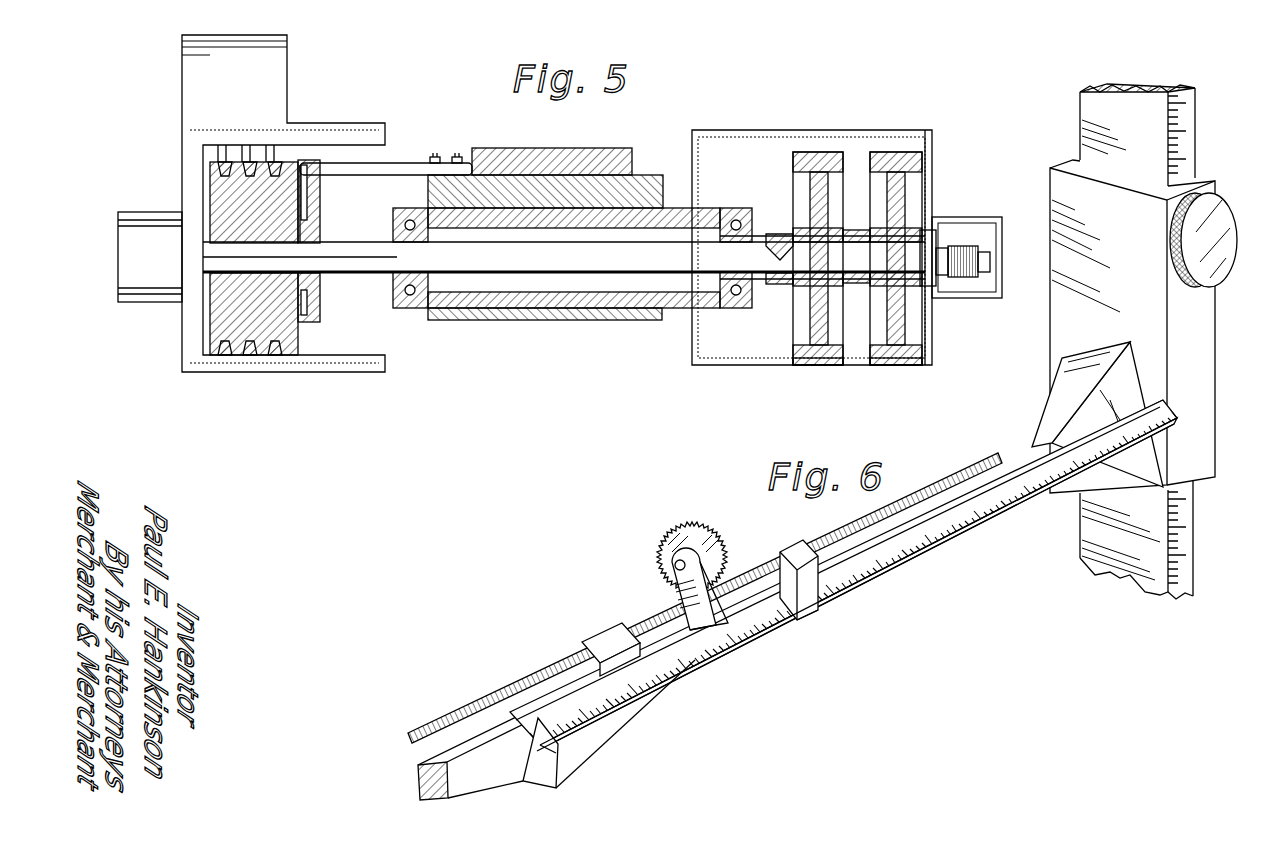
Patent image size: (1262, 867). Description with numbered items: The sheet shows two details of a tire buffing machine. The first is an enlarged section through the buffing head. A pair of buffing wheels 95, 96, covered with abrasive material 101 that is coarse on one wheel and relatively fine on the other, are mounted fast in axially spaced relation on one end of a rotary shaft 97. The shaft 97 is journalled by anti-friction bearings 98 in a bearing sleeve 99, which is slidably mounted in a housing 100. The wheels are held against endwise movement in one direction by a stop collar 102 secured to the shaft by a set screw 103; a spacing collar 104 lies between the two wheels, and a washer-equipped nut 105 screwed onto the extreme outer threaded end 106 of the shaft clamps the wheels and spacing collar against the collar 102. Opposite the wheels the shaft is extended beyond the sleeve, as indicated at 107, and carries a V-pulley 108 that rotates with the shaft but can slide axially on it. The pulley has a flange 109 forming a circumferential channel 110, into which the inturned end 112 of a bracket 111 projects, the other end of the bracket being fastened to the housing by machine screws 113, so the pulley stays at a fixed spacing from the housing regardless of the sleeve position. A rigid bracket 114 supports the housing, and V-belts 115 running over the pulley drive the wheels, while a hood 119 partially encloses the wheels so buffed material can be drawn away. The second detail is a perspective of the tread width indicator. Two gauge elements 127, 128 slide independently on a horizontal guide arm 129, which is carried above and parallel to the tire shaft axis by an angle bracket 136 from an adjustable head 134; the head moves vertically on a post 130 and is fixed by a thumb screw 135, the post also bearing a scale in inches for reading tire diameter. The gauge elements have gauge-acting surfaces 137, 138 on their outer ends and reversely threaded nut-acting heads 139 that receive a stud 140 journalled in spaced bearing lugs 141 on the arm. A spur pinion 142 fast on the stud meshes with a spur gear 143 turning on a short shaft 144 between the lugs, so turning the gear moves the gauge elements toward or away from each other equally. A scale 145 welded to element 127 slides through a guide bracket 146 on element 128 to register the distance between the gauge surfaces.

In FIG. 5, the buffing wheel 95 is at (800, 364).
In FIG. 5, the buffing wheel 96 is at (888, 365).
In FIG. 5, the rotary shaft 97 is at (690, 244).
In FIG. 5, the anti-friction bearings 98 is at (402, 292).
In FIG. 5, the bearing sleeve 99 is at (630, 216).
In FIG. 5, the housing 100 is at (566, 196).
In FIG. 5, the abrasive material 101 is at (818, 366).
In FIG. 5, the stop collar 102 is at (780, 285).
In FIG. 5, the set screw 103 is at (780, 232).
In FIG. 5, the spacing collar 104 is at (858, 230).
In FIG. 5, the washer-equipped nut 105 is at (936, 243).
In FIG. 5, the outer threaded end 106 is at (966, 250).
In FIG. 5, the shaft extension 107 is at (360, 236).
In FIG. 5, the V-pulley 108 is at (232, 321).
In FIG. 5, the flange 109 is at (318, 307).
In FIG. 5, the circumferential channel 110 is at (303, 316).
In FIG. 5, the bracket 111 is at (337, 180).
In FIG. 5, the inturned end 112 is at (308, 203).
In FIG. 5, the machine screws 113 is at (456, 156).
In FIG. 5, the rigid bracket 114 is at (513, 147).
In FIG. 5, the V-belts 115 is at (275, 356).
In FIG. 5, the hood 119 is at (890, 131).
In FIG. 6, the gauge element 127 is at (580, 742).
In FIG. 6, the gauge element 128 is at (848, 608).
In FIG. 6, the guide arm 129 is at (418, 772).
In FIG. 6, the post 130 is at (1150, 121).
In FIG. 6, the adjustable head 134 is at (1142, 303).
In FIG. 6, the thumb screw 135 is at (1215, 226).
In FIG. 6, the angle bracket 136 is at (1082, 396).
In FIG. 6, the gauge-acting surface 137 is at (540, 784).
In FIG. 6, the gauge-acting surface 138 is at (843, 613).
In FIG. 6, the nut-acting heads 139 is at (612, 640).
In FIG. 6, the stud 140 is at (520, 676).
In FIG. 6, the bearing lugs 141 is at (714, 598).
In FIG. 6, the spur pinion 142 is at (720, 603).
In FIG. 6, the spur gear 143 is at (682, 530).
In FIG. 6, the short shaft 144 is at (673, 566).
In FIG. 6, the scale 145 is at (692, 662).
In FIG. 6, the guide bracket 146 is at (804, 620).